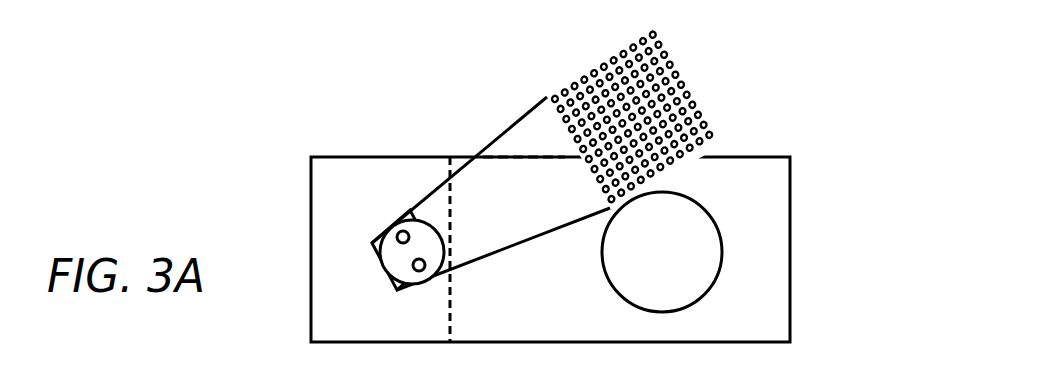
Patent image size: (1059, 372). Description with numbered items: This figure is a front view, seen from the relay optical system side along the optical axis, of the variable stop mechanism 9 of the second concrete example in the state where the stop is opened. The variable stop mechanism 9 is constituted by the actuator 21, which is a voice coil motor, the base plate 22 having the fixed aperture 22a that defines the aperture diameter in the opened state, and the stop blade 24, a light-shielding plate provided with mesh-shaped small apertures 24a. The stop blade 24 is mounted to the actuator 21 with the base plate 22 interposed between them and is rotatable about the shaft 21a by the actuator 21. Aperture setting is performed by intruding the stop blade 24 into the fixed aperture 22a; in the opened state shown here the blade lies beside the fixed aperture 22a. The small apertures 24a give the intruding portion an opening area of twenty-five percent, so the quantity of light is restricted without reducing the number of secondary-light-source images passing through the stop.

The actuator 21 is at (346, 233).
The shaft 21a is at (425, 242).
The base plate 22 is at (780, 186).
The fixed aperture 22a is at (688, 253).
The stop blade 24 is at (513, 137).
The small apertures 24a is at (672, 50).
The variable stop mechanism 9 is at (778, 117).